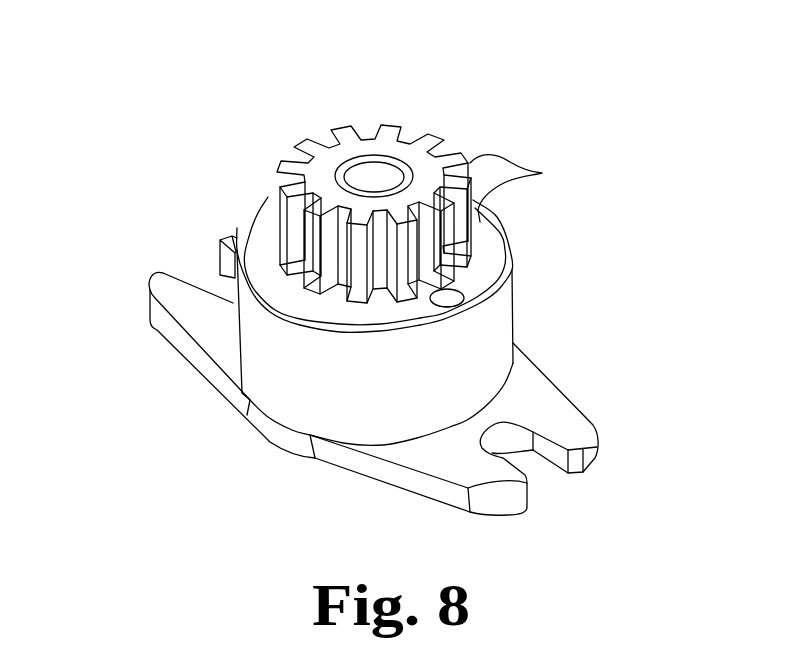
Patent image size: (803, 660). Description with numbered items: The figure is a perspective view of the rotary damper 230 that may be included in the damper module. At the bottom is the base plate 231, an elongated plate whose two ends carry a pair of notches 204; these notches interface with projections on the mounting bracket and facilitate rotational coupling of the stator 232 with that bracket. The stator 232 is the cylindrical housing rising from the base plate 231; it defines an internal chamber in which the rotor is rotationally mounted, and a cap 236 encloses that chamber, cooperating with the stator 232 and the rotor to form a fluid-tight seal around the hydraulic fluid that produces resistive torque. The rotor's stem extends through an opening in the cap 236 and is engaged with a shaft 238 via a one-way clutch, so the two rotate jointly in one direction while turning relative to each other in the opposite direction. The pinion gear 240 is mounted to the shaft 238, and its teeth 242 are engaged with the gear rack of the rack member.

The rotary damper 230 is at (364, 293).
The base plate 231 is at (368, 383).
The stator 232 is at (395, 310).
The cap 236 is at (260, 238).
The shaft 238 is at (372, 170).
The pinion gear 240 is at (430, 177).
The teeth 242 is at (542, 173).
The notches 204 is at (197, 270).